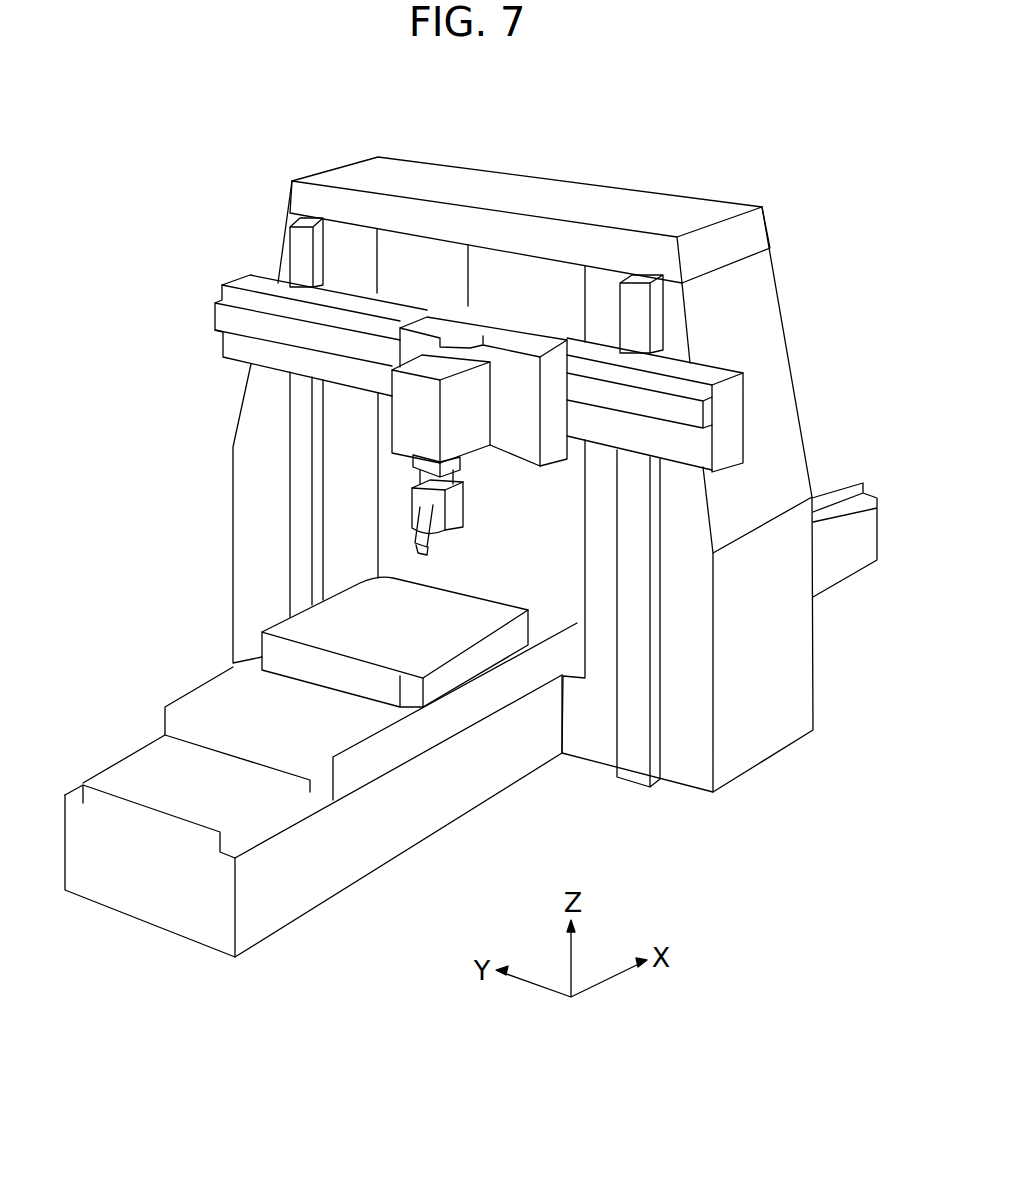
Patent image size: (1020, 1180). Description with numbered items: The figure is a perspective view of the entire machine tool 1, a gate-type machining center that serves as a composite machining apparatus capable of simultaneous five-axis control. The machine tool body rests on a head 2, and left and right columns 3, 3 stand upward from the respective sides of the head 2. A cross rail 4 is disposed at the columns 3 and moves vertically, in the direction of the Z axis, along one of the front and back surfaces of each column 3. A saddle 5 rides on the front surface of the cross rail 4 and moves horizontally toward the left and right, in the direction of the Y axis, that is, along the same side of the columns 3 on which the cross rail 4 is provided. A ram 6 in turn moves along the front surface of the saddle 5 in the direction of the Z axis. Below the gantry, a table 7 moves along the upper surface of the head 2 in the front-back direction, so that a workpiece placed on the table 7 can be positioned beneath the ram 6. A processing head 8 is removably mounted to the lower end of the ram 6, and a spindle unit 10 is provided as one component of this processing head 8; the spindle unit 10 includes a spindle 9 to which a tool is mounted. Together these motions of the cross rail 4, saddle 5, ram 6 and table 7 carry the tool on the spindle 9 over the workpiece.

The machine tool 1 is at (615, 185).
The head 2 is at (172, 782).
The column 3 is at (247, 440).
The cross rail 4 is at (277, 283).
The saddle 5 is at (470, 330).
The ram 6 is at (427, 365).
The table 7 is at (310, 628).
The processing head 8 is at (480, 505).
The spindle 9 is at (460, 530).
The spindle unit 10 is at (465, 503).